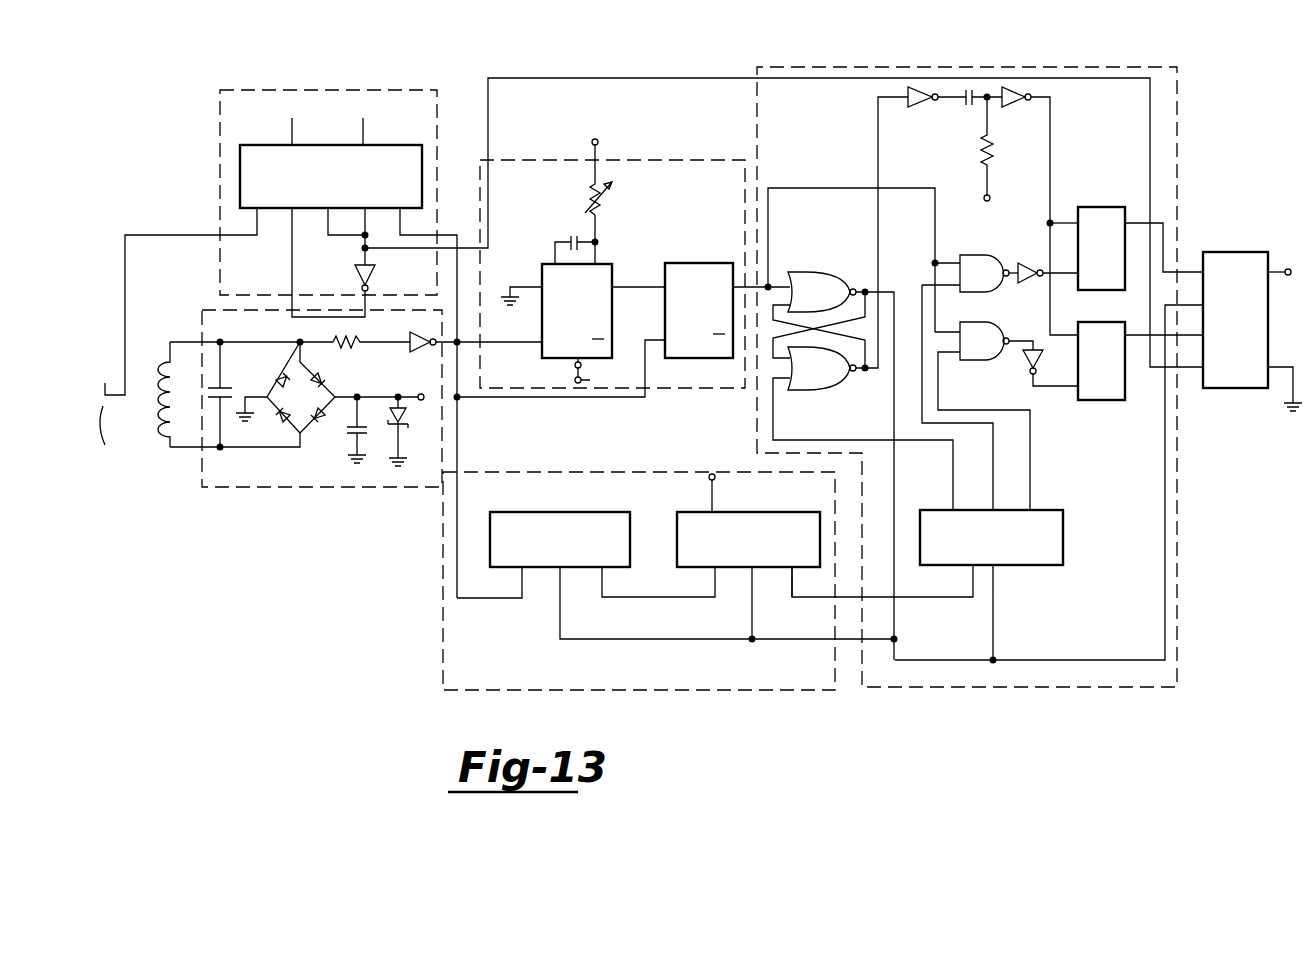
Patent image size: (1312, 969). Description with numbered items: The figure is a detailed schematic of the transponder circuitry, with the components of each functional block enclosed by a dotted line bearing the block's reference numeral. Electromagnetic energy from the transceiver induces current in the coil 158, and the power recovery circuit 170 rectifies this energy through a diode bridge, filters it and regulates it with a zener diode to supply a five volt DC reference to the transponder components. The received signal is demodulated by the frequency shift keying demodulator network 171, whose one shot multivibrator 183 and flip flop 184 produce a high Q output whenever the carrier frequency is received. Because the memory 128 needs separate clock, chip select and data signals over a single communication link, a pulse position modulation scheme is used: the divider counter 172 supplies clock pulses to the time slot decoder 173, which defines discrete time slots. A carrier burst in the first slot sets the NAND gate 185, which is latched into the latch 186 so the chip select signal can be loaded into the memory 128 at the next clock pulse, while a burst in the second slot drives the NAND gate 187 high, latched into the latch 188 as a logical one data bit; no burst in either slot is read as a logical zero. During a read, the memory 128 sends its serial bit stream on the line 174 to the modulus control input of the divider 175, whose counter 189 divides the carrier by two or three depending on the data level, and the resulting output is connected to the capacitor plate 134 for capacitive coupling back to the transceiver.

The memory 128 is at (1250, 255).
The capacitor plate 134 is at (121, 441).
The coil 158 is at (175, 452).
The power recovery circuit 170 is at (402, 477).
The frequency shift keying demodulator network 171 is at (512, 172).
The counter 172 is at (705, 678).
The time slot decoder 173 is at (1080, 688).
The line 174 is at (675, 78).
The divider 175 is at (347, 92).
The one shot multivibrator 183 is at (607, 322).
The flip flop 184 is at (690, 355).
The NAND gate 185 is at (985, 290).
The latch 186 is at (1100, 205).
The NAND gate 187 is at (972, 355).
The latch 188 is at (1100, 397).
The counter 189 is at (385, 150).